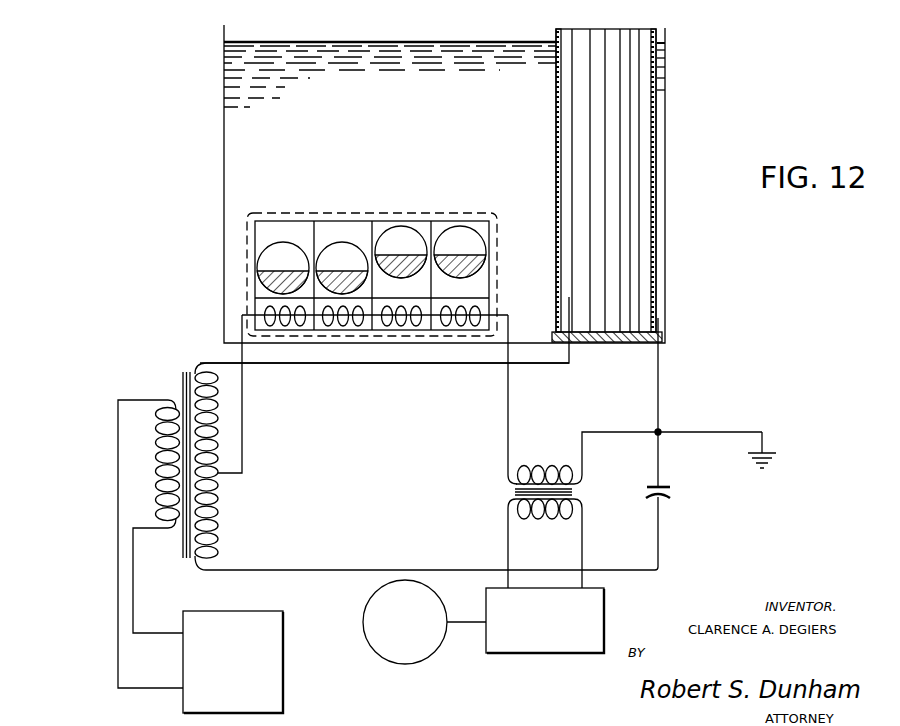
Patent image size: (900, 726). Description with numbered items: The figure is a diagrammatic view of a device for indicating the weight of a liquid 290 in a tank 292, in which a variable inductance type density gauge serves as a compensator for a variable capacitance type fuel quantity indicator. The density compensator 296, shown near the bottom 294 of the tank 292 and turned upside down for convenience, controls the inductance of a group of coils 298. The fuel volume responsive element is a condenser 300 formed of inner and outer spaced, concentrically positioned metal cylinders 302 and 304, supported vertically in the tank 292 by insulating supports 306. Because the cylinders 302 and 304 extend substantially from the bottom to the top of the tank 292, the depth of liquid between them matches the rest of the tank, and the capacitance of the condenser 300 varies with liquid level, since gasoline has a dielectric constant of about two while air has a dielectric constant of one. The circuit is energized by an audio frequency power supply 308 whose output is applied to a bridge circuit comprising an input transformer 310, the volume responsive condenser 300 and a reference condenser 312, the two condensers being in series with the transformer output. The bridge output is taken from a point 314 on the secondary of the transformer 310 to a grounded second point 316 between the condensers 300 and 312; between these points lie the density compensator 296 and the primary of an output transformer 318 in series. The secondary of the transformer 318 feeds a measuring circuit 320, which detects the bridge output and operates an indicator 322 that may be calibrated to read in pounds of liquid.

The liquid 290 is at (336, 50).
The tank 292 is at (224, 156).
The bottom of the tank 294 is at (366, 343).
The density compensator 296 is at (419, 213).
The coils 298 is at (342, 328).
The condenser 300 is at (607, 29).
The inner metal cylinder 302 is at (640, 29).
The outer metal cylinder 304 is at (556, 28).
The insulating supports 306 is at (552, 336).
The audio frequency power supply 308 is at (283, 637).
The input transformer 310 is at (188, 372).
The reference condenser 312 is at (672, 496).
The point on the secondary of the transformer 314 is at (218, 473).
The second point 316 is at (658, 432).
The output transformer 318 is at (515, 492).
The measuring circuit 320 is at (604, 623).
The indicator 322 is at (400, 664).